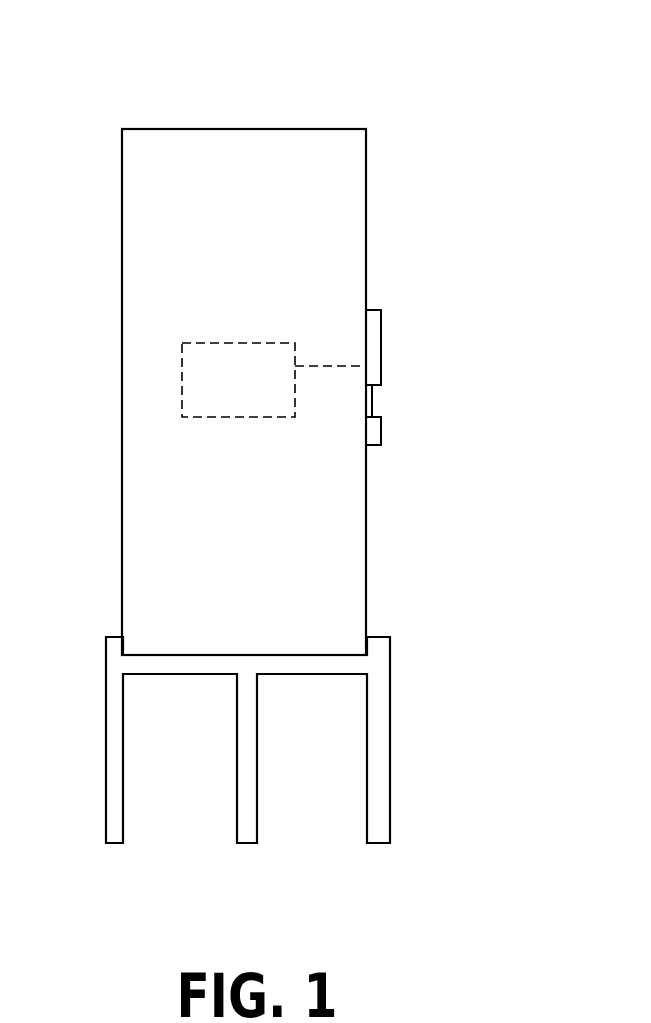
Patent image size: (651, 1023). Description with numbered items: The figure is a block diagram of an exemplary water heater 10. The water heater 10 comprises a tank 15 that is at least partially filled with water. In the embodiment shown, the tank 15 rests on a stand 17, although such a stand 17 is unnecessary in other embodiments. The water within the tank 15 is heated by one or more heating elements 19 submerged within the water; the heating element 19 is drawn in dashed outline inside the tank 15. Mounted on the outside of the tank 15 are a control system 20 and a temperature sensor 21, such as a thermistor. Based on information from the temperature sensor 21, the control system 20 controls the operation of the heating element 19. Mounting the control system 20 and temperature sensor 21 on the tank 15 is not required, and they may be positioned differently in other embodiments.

The water heater 10 is at (340, 78).
The tank 15 is at (366, 210).
The stand 17 is at (106, 745).
The heating element 19 is at (238, 343).
The control system 20 is at (381, 327).
The temperature sensor 21 is at (381, 432).